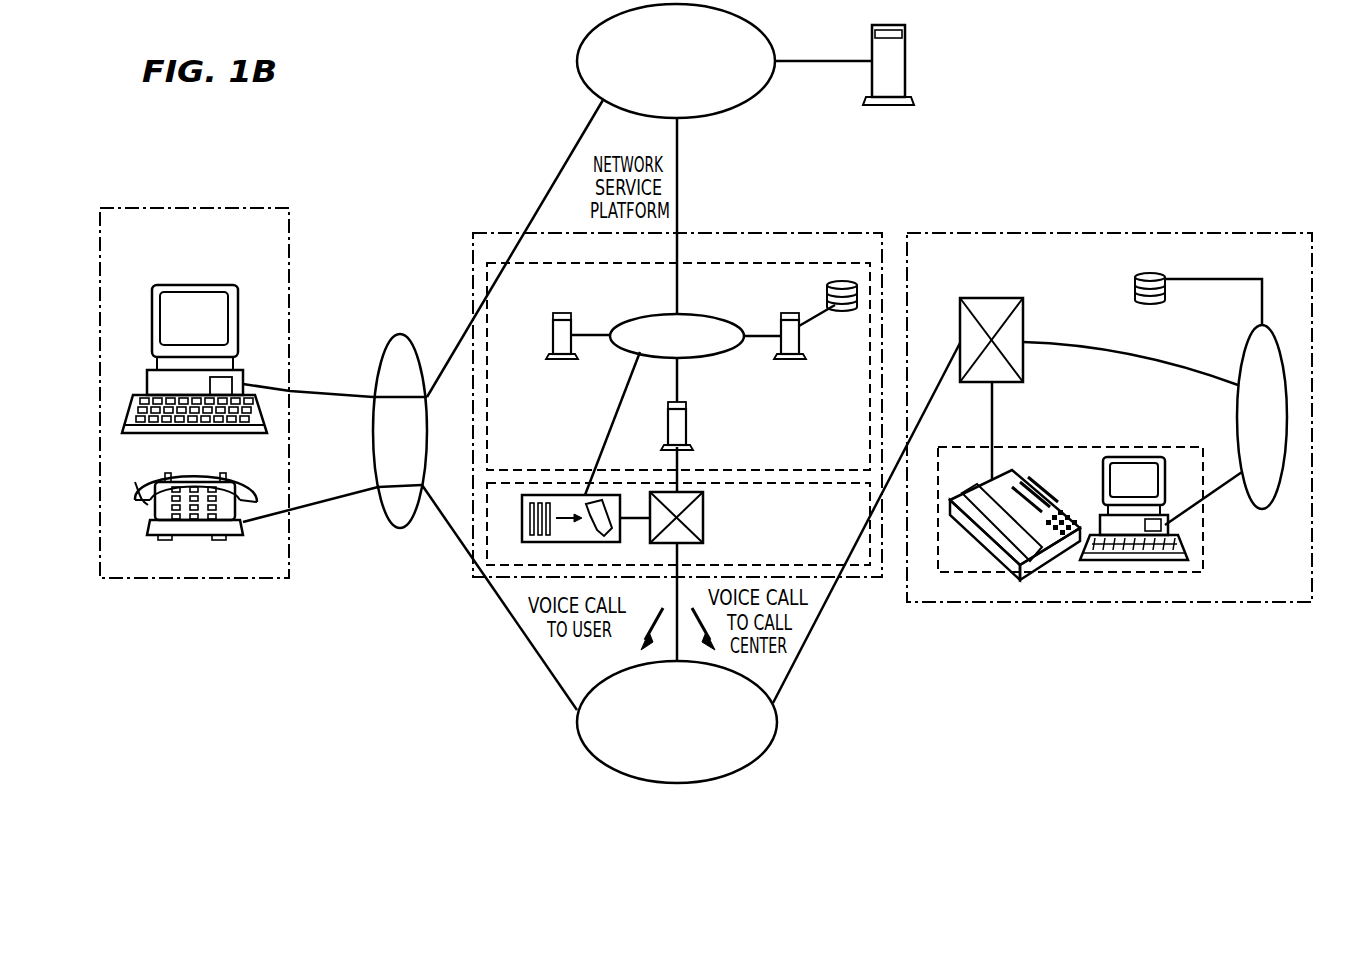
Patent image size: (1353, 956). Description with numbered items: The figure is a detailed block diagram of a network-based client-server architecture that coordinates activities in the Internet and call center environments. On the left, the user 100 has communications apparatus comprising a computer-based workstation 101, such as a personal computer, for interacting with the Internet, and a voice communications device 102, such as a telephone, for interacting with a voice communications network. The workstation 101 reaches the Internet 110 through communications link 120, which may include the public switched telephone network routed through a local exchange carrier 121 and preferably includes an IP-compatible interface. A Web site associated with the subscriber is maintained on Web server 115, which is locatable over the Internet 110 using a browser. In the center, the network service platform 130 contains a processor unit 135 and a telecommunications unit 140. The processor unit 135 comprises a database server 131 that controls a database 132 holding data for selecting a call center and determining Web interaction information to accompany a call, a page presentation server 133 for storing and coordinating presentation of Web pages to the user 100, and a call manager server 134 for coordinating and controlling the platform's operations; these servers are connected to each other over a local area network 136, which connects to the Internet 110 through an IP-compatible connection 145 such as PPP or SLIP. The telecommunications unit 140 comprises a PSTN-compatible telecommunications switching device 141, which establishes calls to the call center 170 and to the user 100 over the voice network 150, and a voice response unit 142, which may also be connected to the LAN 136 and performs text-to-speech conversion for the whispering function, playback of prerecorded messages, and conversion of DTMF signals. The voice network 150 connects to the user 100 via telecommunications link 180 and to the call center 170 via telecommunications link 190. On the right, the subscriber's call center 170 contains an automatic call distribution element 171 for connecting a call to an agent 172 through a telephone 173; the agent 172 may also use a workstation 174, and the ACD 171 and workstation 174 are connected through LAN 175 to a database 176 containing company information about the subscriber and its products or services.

The user 100 is at (250, 208).
The computer-based workstation 101 is at (152, 330).
The voice communications device 102 is at (135, 482).
The Internet 110 is at (577, 52).
The Web server 115 is at (905, 64).
The communications link 120 is at (554, 182).
The local exchange carrier 121 is at (382, 343).
The network service platform 130 is at (783, 233).
The database server 131 is at (780, 323).
The database 132 is at (840, 312).
The page presentation server 133 is at (553, 325).
The call manager server 134 is at (682, 402).
The processor unit 135 is at (708, 263).
The local area network 136 is at (650, 313).
The telecommunications unit 140 is at (482, 560).
The telecommunications switching device 141 is at (705, 532).
The voice response unit 142 is at (522, 510).
The communications link 145 is at (677, 160).
The voice communications network 150 is at (577, 732).
The call center 170 is at (1250, 233).
The automatic call distribution element 171 is at (1028, 312).
The agent 172 is at (1133, 447).
The telephone 173 is at (975, 480).
The workstation 174 is at (1190, 542).
The LAN 175 is at (1240, 360).
The database 176 is at (1162, 272).
The telecommunications link 180 is at (460, 540).
The telecommunications link 190 is at (788, 675).